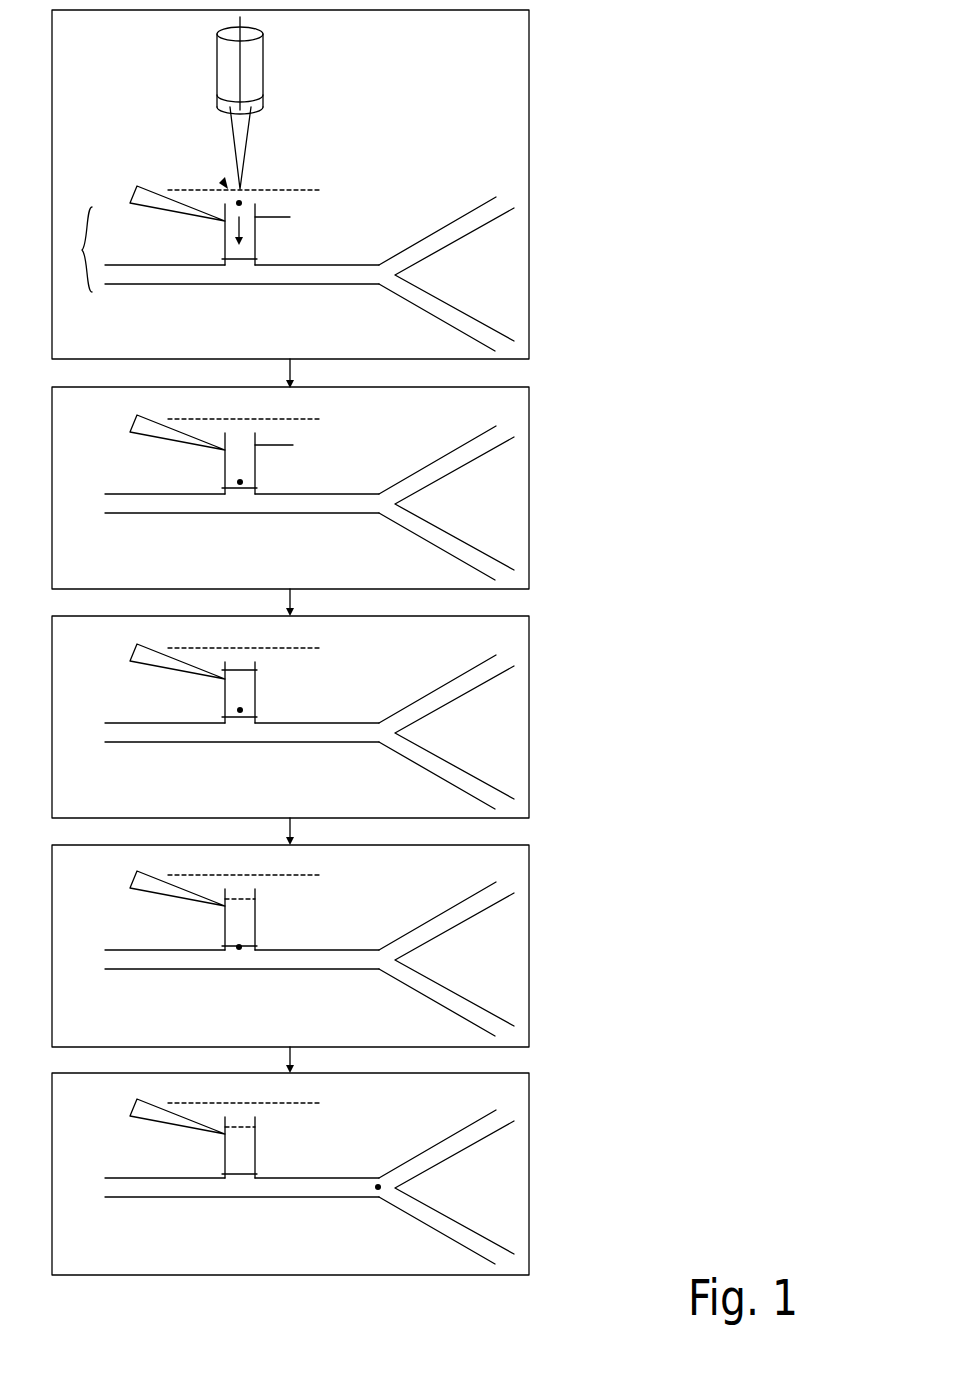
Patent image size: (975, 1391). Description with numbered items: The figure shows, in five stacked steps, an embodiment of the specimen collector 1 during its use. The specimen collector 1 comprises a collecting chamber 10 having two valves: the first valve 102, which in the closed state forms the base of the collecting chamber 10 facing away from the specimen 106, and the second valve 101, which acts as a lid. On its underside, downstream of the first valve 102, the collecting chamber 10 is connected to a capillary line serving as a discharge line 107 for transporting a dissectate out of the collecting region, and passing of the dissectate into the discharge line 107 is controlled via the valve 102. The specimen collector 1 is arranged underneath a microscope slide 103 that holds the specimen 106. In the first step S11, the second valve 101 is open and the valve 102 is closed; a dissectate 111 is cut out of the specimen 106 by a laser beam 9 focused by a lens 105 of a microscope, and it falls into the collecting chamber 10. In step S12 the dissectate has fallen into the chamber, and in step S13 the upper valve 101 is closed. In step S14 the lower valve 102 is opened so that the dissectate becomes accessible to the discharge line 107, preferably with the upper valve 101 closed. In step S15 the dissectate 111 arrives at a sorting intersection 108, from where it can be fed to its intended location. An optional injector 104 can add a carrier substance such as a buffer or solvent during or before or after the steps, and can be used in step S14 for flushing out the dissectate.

The specimen collector 1 is at (78, 249).
The laser beam 9 is at (245, 137).
The collecting chamber 10 is at (256, 252).
The second valve 101 is at (290, 217).
The first valve 102 is at (237, 263).
The microscope slide 103 is at (175, 188).
The injector 104 is at (136, 186).
The lens 105 is at (263, 77).
The specimen 106 is at (223, 182).
The discharge line 107 is at (158, 278).
The sorting intersection 108 is at (383, 287).
The dissectate 111 is at (243, 203).
The first step S11 is at (529, 113).
The second step S12 is at (529, 492).
The third step S13 is at (529, 720).
The fourth step S14 is at (529, 947).
The fifth step S15 is at (529, 1177).